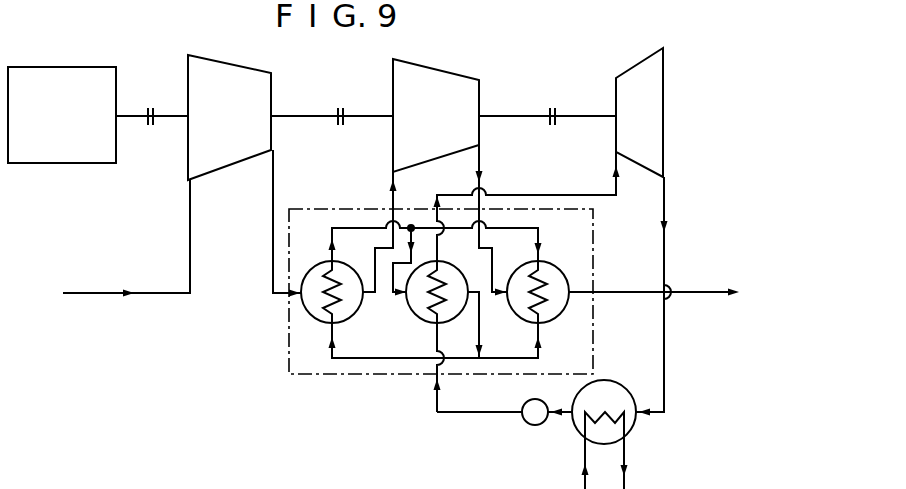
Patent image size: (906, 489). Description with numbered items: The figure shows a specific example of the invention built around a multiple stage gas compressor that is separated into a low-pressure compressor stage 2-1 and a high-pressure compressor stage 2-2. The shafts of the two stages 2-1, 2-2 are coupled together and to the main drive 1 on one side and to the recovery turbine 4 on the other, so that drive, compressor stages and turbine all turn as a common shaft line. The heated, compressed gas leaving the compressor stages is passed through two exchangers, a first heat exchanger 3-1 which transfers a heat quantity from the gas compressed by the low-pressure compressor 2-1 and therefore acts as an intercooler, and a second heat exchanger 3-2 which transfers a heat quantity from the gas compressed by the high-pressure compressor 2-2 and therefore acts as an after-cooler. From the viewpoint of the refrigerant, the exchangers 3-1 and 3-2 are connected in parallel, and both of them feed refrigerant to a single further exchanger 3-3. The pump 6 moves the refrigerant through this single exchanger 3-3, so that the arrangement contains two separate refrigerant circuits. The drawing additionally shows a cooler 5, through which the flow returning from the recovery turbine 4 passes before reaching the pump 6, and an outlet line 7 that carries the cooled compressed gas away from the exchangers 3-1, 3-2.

The main drive 1 is at (68, 160).
The low-pressure compressor stage 2-1 is at (222, 162).
The high-pressure compressor stage 2-2 is at (467, 133).
The first heat exchanger 3-1 is at (345, 312).
The second heat exchanger 3-2 is at (550, 315).
The exchanger 3-3 is at (418, 313).
The recovery turbine 4 is at (654, 142).
The cooler / heat exchanger 5 is at (630, 427).
The pump 6 is at (535, 425).
The outlet line 7 is at (695, 288).